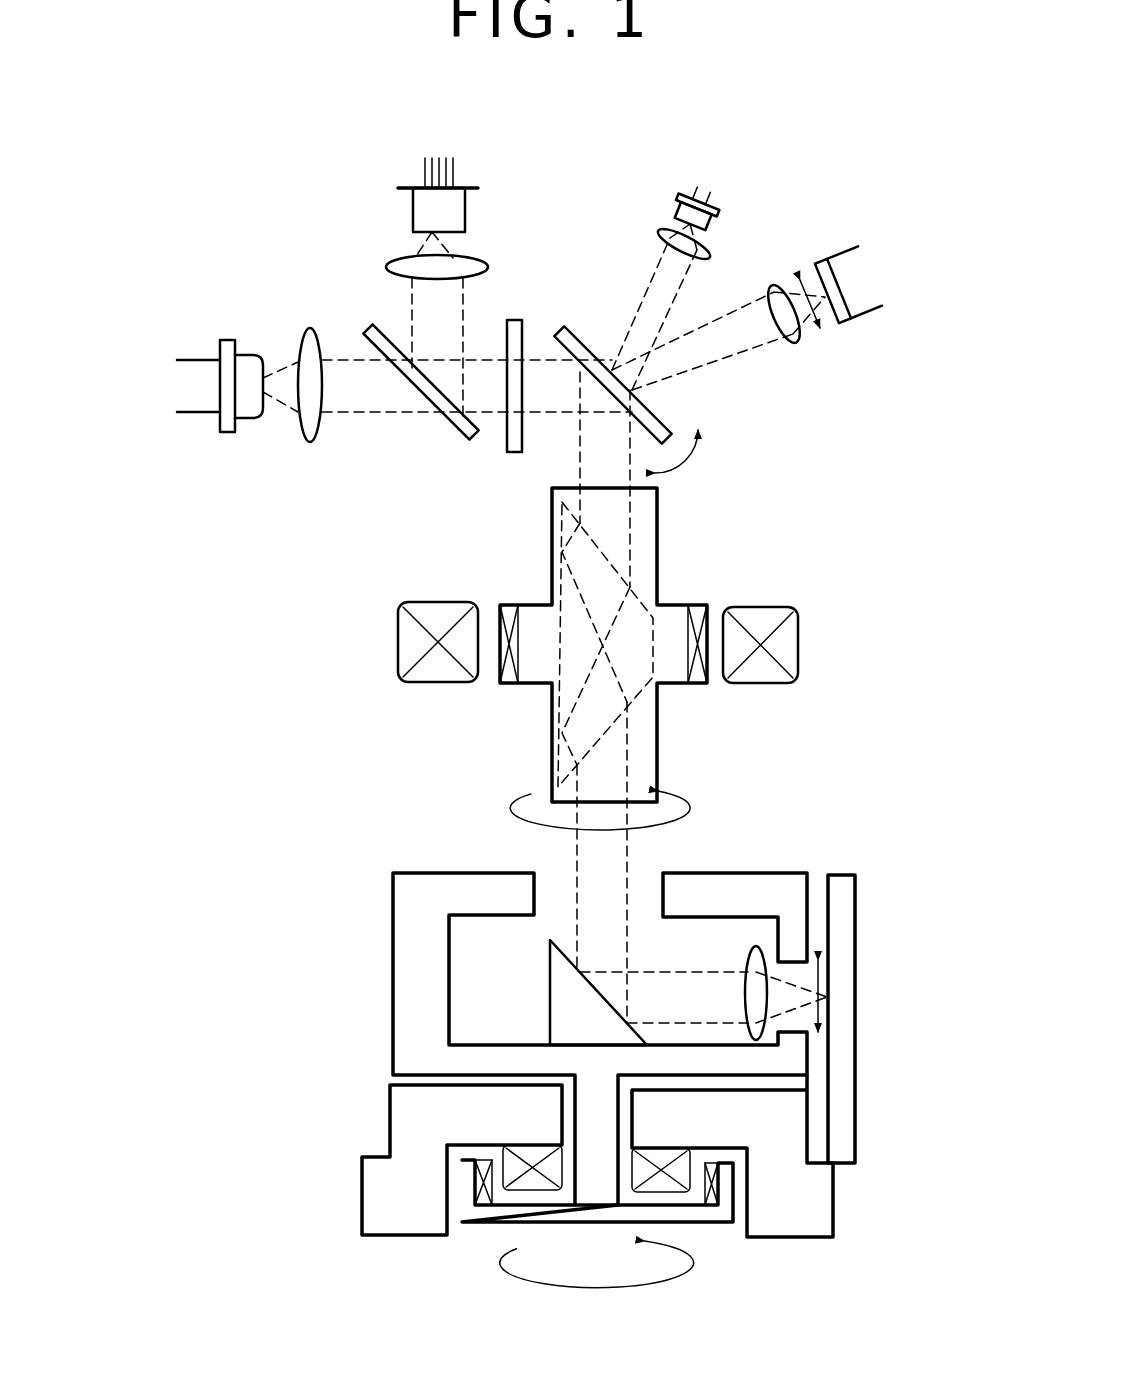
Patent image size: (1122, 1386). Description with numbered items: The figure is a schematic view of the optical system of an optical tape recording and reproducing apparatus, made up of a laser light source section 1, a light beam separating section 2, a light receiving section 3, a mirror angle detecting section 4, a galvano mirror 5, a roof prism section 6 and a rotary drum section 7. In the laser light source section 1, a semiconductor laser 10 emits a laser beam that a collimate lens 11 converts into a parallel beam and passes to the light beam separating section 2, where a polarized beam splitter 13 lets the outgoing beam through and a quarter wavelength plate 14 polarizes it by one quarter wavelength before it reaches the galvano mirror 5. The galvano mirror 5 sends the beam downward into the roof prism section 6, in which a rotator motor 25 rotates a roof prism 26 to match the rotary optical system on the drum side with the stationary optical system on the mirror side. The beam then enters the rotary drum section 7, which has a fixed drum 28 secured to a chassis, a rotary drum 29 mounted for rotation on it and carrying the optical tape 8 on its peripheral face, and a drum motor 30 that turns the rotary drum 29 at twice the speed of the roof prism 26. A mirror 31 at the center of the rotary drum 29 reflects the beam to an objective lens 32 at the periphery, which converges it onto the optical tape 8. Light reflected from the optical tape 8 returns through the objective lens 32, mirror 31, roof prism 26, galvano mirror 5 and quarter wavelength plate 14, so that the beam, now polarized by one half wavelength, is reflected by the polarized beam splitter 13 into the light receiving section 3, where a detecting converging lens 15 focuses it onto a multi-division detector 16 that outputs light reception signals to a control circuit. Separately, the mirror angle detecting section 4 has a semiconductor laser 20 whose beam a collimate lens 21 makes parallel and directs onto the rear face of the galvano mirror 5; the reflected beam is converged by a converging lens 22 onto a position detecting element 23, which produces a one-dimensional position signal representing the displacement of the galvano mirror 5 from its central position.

The laser light source section 1 is at (404, 375).
The light beam separating section 2 is at (397, 390).
The light receiving section 3 is at (458, 289).
The mirror angle detecting section 4 is at (740, 283).
The galvano mirror 5 is at (582, 340).
The roof prism section 6 is at (632, 697).
The rotary drum section 7 is at (612, 1041).
The optical tape 8 is at (857, 960).
The semiconductor laser 10 is at (233, 433).
The collimate lens 11 is at (312, 430).
The polarized beam splitter 13 is at (363, 322).
The quarter wavelength plate 14 is at (518, 320).
The detecting converging lens 15 is at (397, 258).
The multi-division detector 16 is at (467, 210).
The semiconductor laser 20 is at (683, 198).
The collimate lens 21 is at (658, 233).
The converging lens 22 is at (785, 342).
The position detecting element 23 is at (852, 323).
The rotator motor 25 is at (798, 647).
The roof prism 26 is at (658, 520).
The fixed drum 28 is at (792, 1240).
The rotary drum 29 is at (393, 985).
The drum motor 30 is at (494, 1221).
The mirror 31 is at (550, 1000).
The objective lens 32 is at (747, 960).